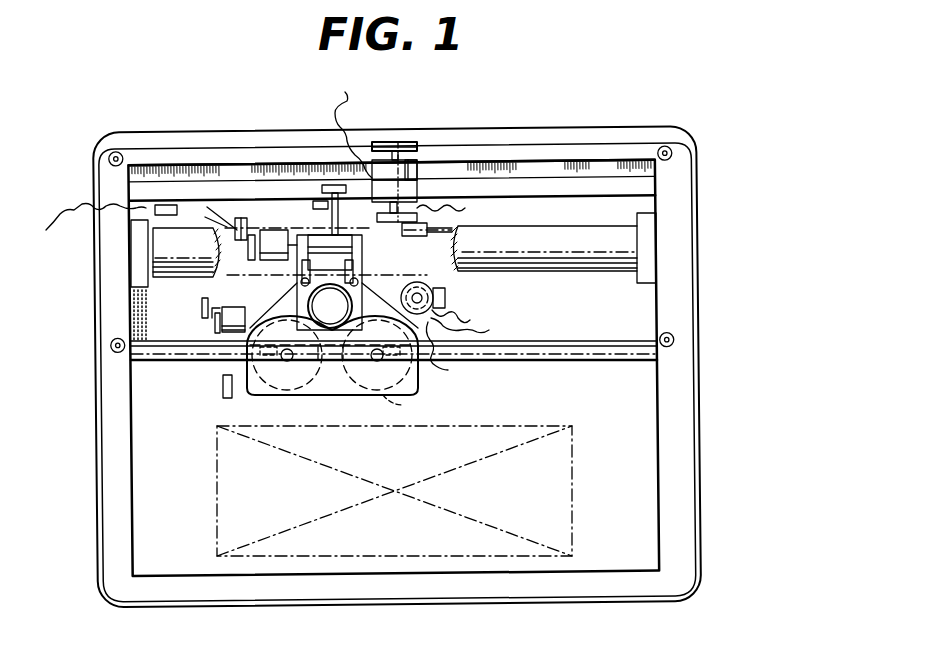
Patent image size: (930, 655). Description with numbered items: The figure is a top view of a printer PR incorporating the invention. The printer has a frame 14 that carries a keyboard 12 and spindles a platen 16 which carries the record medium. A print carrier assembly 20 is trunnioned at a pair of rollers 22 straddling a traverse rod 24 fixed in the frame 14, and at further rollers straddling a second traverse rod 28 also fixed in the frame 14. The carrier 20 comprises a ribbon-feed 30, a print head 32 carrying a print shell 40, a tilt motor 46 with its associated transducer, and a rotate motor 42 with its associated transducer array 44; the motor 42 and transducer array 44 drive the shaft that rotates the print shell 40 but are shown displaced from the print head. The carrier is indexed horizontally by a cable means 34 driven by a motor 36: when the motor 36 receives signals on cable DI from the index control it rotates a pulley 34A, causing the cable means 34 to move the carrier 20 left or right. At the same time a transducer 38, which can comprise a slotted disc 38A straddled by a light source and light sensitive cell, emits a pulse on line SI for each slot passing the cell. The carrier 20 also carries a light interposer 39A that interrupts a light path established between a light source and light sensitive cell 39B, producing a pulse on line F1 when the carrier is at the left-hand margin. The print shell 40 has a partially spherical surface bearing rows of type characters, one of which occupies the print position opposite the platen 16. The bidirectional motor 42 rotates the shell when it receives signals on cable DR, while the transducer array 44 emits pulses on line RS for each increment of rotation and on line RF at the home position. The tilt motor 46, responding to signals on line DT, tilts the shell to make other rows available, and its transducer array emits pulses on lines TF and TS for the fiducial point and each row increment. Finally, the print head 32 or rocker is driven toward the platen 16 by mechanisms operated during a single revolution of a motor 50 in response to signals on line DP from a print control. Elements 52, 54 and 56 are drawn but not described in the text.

The keyboard 12 is at (575, 485).
The frame 14 is at (690, 422).
The platen 16 is at (597, 208).
The print carrier assembly 20 is at (345, 400).
The rollers 22 is at (323, 185).
The traverse rod 24 is at (538, 188).
The traverse rod 28 is at (610, 362).
The ribbon-feed 30 is at (310, 388).
The print head 32 is at (300, 287).
The cable means 34 is at (668, 302).
The pulley 34A is at (397, 140).
The motor 36 is at (412, 165).
The transducer 38 is at (458, 240).
The disc 38A is at (374, 230).
The light interposer 39A is at (315, 202).
The light source and light sensitive cell 39B is at (163, 205).
The print shell 40 is at (343, 300).
The rotate motor 42 is at (436, 252).
The transducer array 44 is at (445, 292).
The tilt motor 46 is at (272, 262).
The motor 50 is at (222, 345).
The pin 52 is at (208, 330).
The shaft support block 54 is at (653, 245).
The wheel portion 56 is at (408, 403).
The printer PR is at (708, 162).
The cable DI is at (345, 129).
The line SI is at (454, 211).
The line F1 is at (87, 228).
The line TS is at (223, 197).
The line TF is at (213, 227).
The line DT is at (273, 239).
The line DP is at (234, 300).
The line RF is at (463, 310).
The line RS is at (474, 328).
The cable DR is at (451, 353).